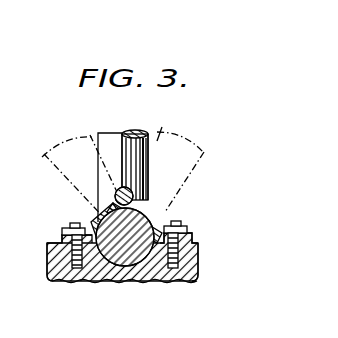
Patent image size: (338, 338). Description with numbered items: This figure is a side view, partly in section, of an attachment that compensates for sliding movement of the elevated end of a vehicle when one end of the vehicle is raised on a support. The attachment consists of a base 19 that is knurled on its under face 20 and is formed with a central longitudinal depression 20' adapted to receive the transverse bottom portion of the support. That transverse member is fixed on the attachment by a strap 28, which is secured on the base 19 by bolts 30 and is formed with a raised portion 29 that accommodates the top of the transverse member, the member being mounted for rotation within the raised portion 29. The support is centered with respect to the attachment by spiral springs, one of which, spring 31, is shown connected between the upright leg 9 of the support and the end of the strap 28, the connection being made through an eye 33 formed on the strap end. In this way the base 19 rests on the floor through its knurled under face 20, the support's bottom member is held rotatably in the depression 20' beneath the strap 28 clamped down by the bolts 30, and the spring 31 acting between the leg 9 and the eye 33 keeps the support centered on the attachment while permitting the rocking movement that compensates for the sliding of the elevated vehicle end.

The upright leg 9 is at (108, 138).
The base 19 is at (190, 263).
The under face 20 is at (137, 300).
The central longitudinal depression 20' is at (89, 298).
The strap 28 is at (172, 213).
The raised portion 29 is at (90, 215).
The bolts 30 is at (62, 233).
The spiral spring 31 is at (114, 194).
The eye 33 is at (133, 193).